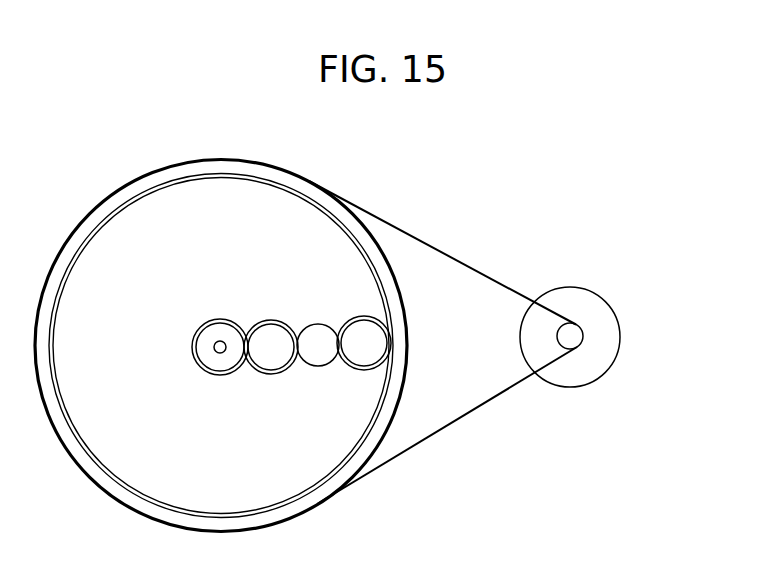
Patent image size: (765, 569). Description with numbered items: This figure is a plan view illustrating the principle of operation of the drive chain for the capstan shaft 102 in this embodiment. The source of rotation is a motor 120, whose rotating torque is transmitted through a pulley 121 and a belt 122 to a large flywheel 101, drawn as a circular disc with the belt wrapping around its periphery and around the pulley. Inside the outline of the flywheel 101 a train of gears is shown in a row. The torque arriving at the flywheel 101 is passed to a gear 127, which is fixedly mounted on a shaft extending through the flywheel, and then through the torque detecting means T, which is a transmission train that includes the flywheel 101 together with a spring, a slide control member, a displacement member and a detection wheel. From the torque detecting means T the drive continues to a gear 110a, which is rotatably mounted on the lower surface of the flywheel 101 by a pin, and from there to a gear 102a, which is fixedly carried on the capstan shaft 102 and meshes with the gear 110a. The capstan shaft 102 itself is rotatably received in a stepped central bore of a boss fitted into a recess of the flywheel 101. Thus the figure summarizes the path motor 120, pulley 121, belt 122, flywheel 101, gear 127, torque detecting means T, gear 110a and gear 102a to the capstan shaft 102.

The flywheel 101 is at (413, 369).
The capstan shaft 102 is at (218, 353).
The gear 102a is at (192, 341).
The gear 110a is at (258, 372).
The torque detecting means T is at (318, 324).
The gear 127 is at (349, 367).
The belt 122 is at (492, 278).
The pulley 121 is at (575, 322).
The motor 120 is at (616, 322).